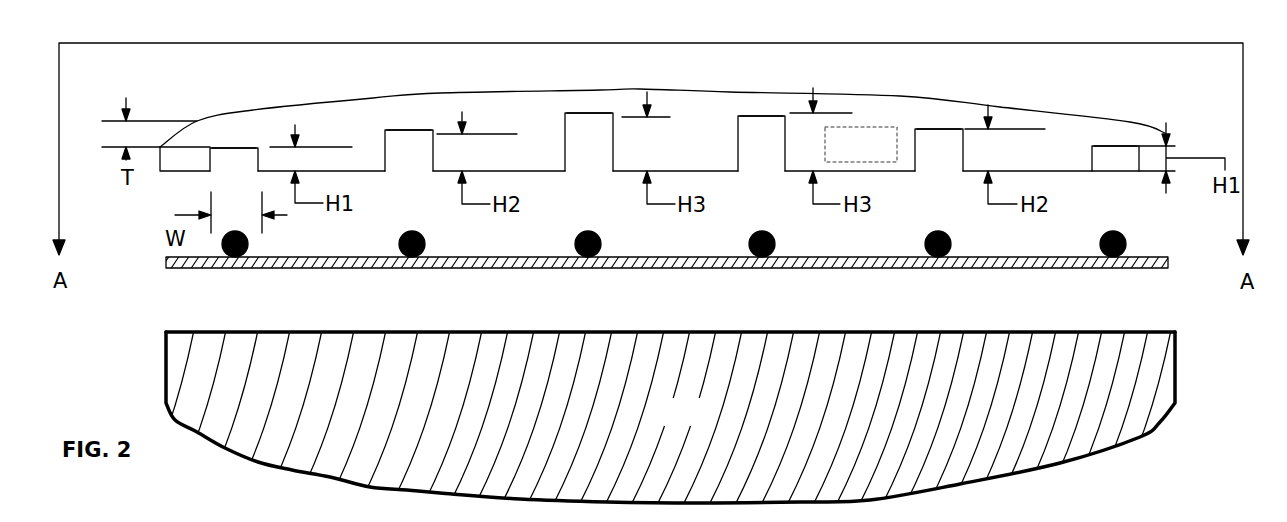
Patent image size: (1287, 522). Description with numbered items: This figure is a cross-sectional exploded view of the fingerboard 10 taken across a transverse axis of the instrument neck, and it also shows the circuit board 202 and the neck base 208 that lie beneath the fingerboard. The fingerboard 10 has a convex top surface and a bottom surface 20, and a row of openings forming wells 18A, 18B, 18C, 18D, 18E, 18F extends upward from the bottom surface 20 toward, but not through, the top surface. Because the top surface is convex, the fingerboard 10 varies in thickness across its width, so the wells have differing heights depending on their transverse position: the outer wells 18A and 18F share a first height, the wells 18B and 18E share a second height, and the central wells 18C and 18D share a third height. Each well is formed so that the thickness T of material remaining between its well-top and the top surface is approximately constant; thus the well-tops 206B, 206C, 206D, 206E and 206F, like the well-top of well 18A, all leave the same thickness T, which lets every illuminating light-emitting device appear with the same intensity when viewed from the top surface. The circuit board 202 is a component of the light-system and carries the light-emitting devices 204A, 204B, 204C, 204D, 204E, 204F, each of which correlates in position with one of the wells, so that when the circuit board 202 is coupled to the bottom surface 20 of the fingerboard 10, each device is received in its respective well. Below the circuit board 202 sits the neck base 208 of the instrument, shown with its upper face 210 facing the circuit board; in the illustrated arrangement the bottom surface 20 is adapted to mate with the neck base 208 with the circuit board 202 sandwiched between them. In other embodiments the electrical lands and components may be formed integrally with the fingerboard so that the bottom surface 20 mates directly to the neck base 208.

The fingerboard 10 is at (861, 144).
The well 18A is at (234, 160).
The well 18B is at (409, 151).
The well 18C is at (589, 143).
The well 18D is at (761, 144).
The well 18E is at (939, 151).
The well 18F is at (1115, 159).
The bottom surface 20 is at (178, 173).
The circuit board 202 is at (998, 258).
The light-emitting device 204A is at (237, 250).
The light-emitting device 204B is at (414, 250).
The light-emitting device 204C is at (590, 250).
The light-emitting device 204D is at (764, 250).
The light-emitting device 204E is at (940, 250).
The light-emitting device 204F is at (1115, 250).
The well-top 206B is at (230, 147).
The well-top 206C is at (588, 112).
The well-top 206D is at (762, 116).
The well-top 206E is at (937, 129).
The well-top 206F is at (1112, 146).
The neck base 208 is at (651, 422).
The lens top surface 210 is at (308, 331).